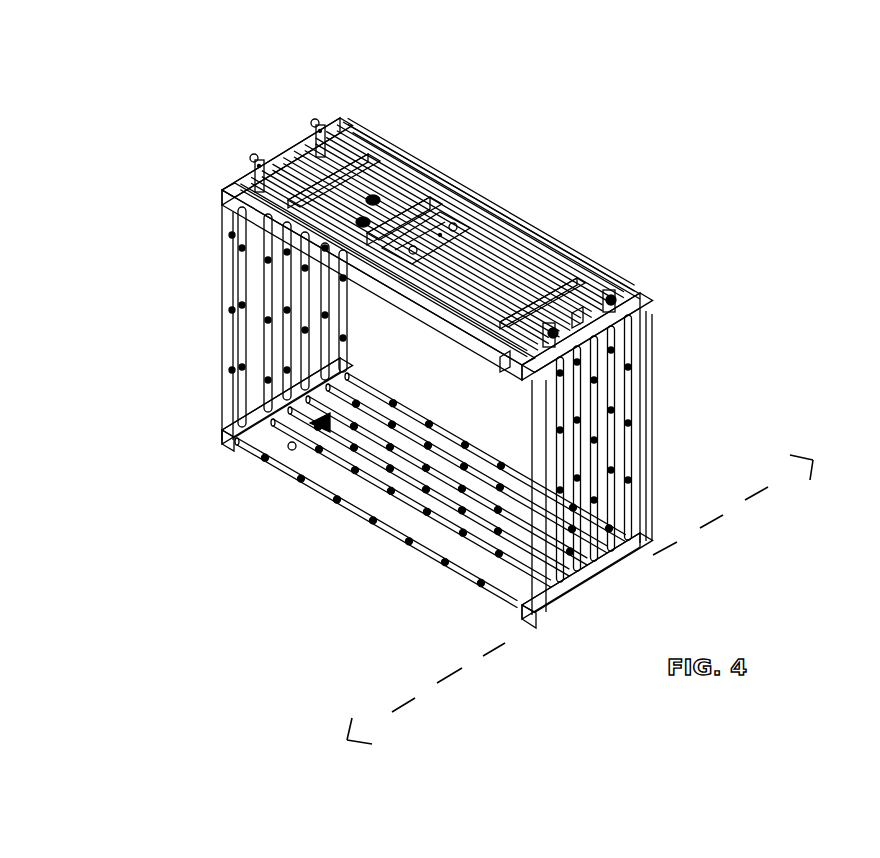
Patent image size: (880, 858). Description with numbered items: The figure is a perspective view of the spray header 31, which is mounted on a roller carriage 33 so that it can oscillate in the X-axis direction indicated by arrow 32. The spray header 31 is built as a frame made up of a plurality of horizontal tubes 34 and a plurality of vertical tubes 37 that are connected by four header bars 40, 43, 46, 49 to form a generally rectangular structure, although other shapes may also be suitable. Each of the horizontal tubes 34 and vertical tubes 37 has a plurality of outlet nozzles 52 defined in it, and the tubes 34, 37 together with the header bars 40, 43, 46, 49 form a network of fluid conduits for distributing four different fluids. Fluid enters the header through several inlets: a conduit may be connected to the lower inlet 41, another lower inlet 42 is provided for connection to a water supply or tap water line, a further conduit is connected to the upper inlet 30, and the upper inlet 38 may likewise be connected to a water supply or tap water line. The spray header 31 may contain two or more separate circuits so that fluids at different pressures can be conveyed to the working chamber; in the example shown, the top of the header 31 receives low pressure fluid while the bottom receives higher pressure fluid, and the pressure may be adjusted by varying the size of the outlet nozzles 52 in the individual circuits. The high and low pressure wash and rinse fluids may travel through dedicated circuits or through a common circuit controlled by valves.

The upper inlet 30 is at (373, 200).
The spray header 31 is at (553, 153).
The arrow 32 is at (758, 493).
The roller carriage 33 is at (313, 125).
The horizontal tubes 34 is at (320, 500).
The vertical tubes 37 is at (220, 305).
The upper inlet 38 is at (362, 220).
The header bar 40 is at (222, 445).
The lower inlet 41 is at (318, 420).
The lower inlet 42 is at (282, 428).
The header bar 43 is at (533, 625).
The header bar 46 is at (218, 195).
The header bar 49 is at (650, 300).
The outlet nozzles 52 is at (440, 430).